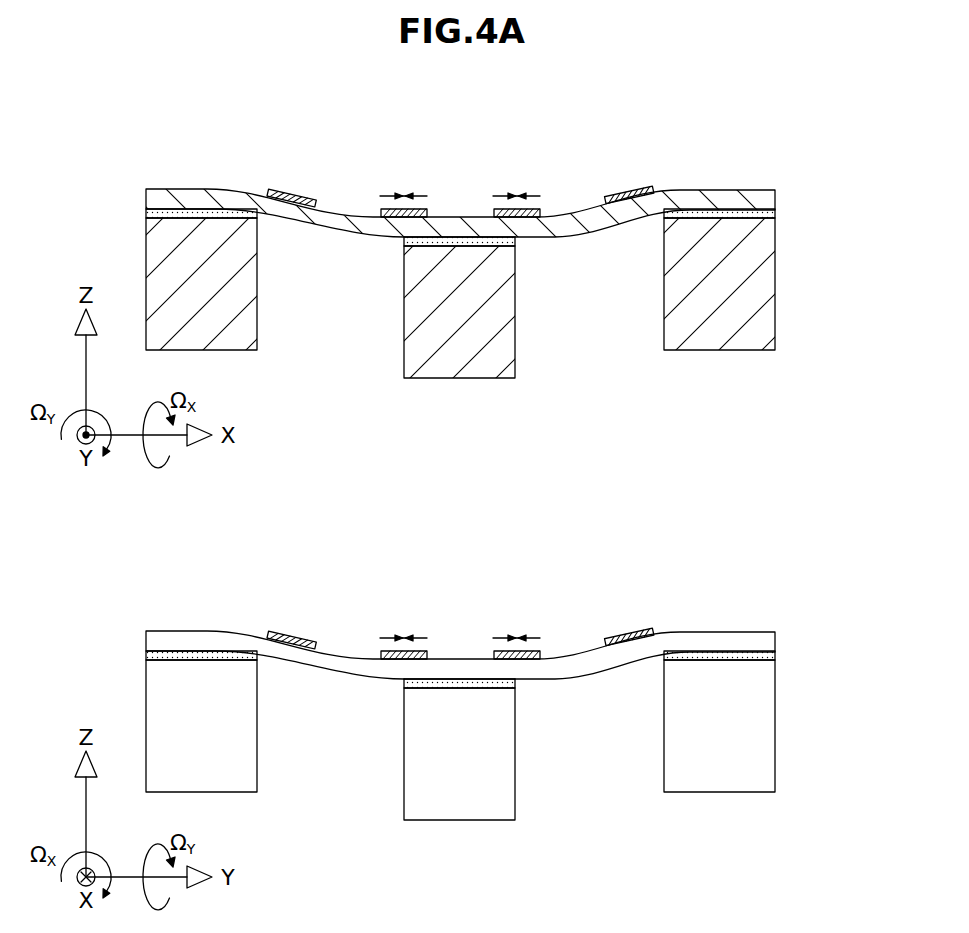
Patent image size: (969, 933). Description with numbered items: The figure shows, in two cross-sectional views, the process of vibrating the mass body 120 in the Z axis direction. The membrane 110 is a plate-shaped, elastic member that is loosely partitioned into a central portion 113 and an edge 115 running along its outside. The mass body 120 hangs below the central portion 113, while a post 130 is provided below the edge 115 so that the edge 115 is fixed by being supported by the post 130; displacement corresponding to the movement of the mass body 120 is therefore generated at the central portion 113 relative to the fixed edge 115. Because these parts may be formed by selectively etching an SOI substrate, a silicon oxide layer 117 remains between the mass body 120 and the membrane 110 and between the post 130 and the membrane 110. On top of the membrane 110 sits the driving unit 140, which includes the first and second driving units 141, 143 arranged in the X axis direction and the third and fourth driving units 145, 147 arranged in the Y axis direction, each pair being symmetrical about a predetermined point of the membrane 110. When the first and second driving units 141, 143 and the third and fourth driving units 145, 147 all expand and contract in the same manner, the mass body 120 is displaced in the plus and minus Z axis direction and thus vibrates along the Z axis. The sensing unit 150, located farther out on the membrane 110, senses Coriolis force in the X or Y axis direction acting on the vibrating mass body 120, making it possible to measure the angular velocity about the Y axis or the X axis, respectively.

The membrane 110 is at (780, 196).
The central portion 113 is at (467, 230).
The edge 115 is at (190, 198).
The silicon oxide layer 117 is at (755, 213).
The mass body 120 is at (477, 333).
The post 130 is at (217, 318).
The driving unit 140 is at (557, 133).
The first driving unit 141 is at (435, 209).
The second driving unit 143 is at (546, 209).
The third driving unit 145 is at (422, 618).
The fourth driving unit 147 is at (532, 618).
The sensing unit 150 is at (298, 197).